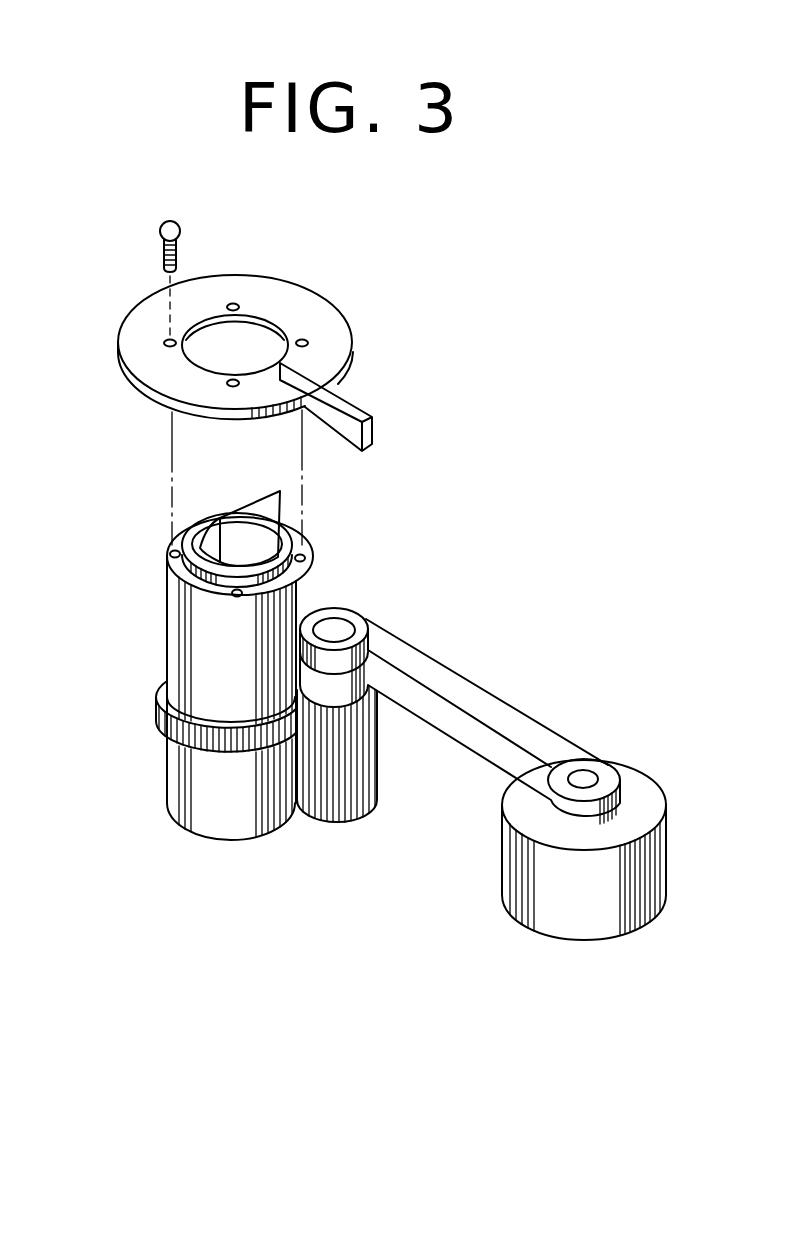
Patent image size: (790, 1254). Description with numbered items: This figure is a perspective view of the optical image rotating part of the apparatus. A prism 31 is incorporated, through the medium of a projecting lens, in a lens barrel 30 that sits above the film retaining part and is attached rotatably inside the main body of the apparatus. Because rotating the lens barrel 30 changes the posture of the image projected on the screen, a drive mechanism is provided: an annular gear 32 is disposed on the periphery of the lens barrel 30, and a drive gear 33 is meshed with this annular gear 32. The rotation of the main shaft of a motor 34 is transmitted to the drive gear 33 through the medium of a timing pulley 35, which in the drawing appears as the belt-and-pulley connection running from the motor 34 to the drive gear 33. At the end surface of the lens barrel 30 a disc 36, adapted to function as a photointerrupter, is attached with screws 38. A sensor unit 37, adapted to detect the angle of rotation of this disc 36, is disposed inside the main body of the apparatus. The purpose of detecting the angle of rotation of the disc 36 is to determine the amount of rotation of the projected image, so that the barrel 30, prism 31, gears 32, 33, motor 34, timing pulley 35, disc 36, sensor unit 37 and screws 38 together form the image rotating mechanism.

The lens barrel 30 is at (297, 573).
The prism 31 is at (268, 519).
The annular gear 32 is at (154, 699).
The drive gear 33 is at (338, 823).
The motor 34 is at (590, 932).
The timing pulley 35 is at (458, 752).
The disc 36 is at (118, 343).
The sensor unit 37 is at (361, 399).
The screws 38 is at (178, 250).